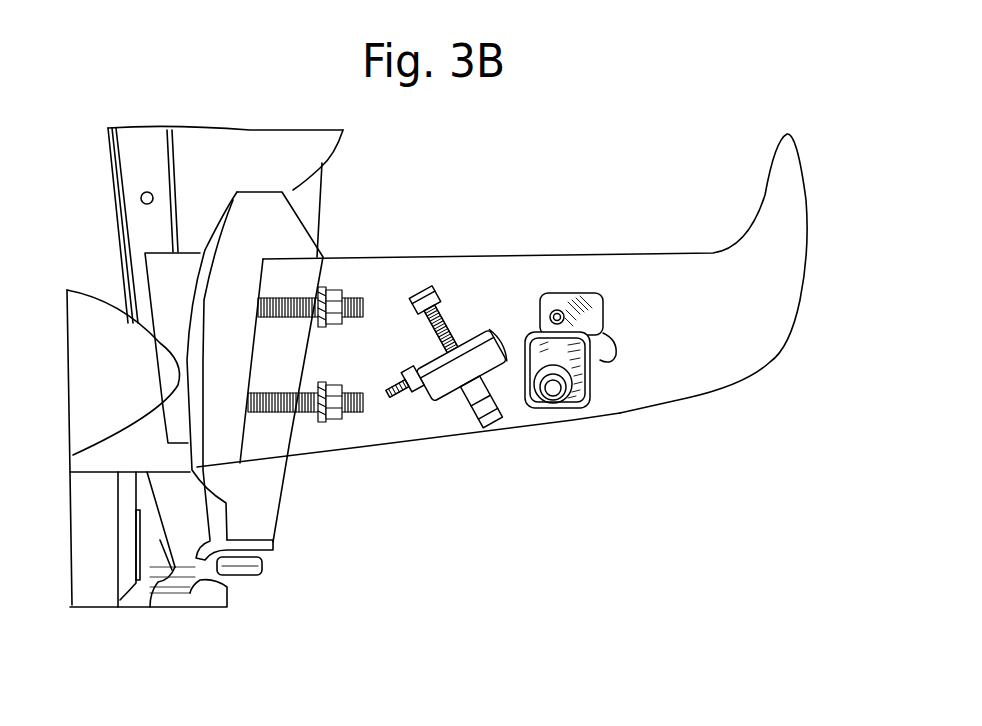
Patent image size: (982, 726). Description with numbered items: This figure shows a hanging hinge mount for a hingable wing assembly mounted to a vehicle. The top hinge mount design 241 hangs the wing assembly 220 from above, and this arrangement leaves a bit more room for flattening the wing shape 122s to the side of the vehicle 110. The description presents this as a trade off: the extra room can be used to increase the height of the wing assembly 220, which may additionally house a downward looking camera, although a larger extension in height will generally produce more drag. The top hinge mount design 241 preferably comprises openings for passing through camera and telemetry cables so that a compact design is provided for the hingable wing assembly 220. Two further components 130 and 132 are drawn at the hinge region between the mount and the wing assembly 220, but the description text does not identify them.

The vehicle 110 is at (132, 383).
The wing shape 122s is at (340, 448).
The sensor 130 is at (567, 400).
The bolt 132 is at (448, 312).
The wing assembly 220 is at (727, 318).
The top hinge mount design 241 is at (267, 233).